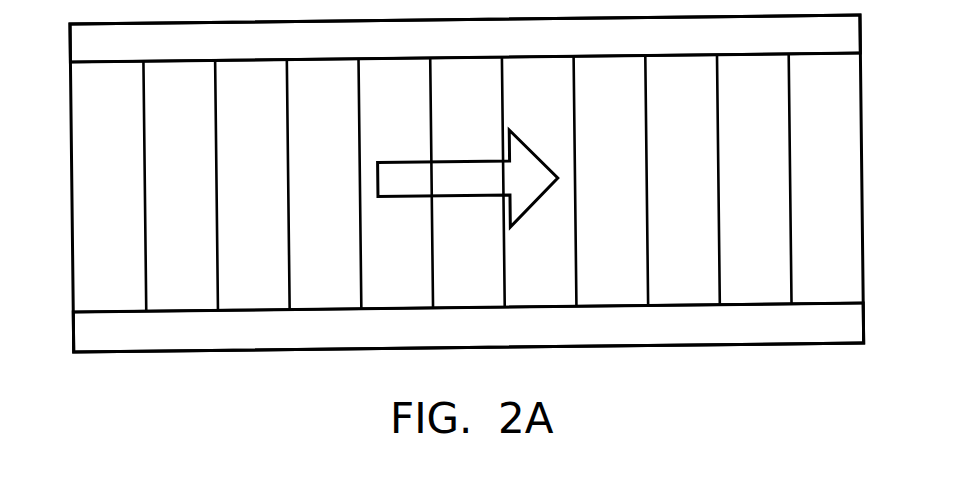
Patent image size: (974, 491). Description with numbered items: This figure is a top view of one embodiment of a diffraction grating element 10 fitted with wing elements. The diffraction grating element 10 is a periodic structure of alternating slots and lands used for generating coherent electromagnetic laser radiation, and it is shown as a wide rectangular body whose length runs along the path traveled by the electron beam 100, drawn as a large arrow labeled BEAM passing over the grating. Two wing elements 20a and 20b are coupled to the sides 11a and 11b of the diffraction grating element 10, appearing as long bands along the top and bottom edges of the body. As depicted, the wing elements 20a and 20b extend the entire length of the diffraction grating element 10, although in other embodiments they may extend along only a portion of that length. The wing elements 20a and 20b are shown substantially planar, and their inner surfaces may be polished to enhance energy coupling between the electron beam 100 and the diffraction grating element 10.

The diffraction grating element 10 is at (862, 171).
The wing element 20a is at (860, 31).
The wing element 20b is at (862, 320).
The side of the diffraction grating element 11a is at (553, 58).
The side of the diffraction grating element 11b is at (555, 307).
The electron beam 100 is at (412, 162).